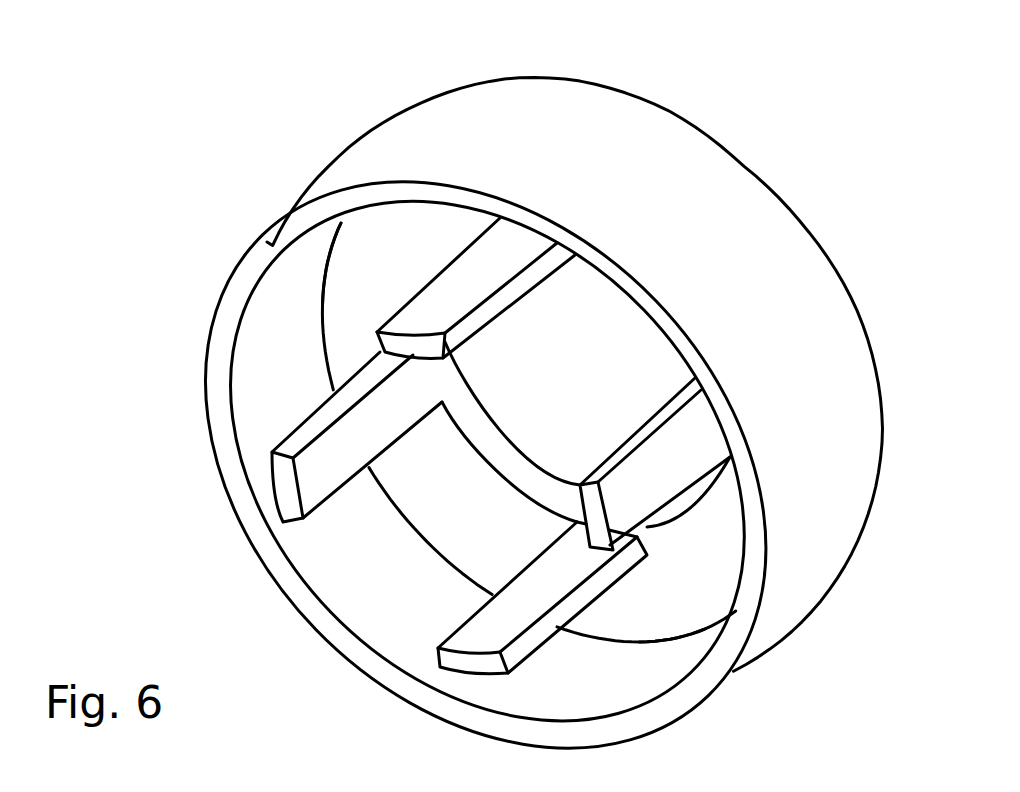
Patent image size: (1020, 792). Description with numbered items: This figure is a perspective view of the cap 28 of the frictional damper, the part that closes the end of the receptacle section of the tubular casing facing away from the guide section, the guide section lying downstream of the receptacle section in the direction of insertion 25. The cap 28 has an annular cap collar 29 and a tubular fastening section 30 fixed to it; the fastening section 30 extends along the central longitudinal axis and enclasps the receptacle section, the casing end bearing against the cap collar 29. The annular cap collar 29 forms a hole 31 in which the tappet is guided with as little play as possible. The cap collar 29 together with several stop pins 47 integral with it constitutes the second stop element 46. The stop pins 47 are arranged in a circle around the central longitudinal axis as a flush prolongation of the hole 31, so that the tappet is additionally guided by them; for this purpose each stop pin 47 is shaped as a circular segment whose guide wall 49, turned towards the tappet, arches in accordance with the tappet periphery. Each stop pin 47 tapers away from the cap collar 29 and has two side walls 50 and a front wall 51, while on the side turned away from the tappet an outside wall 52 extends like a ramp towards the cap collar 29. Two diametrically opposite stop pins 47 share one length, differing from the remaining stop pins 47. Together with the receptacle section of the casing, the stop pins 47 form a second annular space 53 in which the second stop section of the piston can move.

The direction of insertion 25 is at (330, 67).
The cap 28 is at (746, 103).
The cap collar 29 is at (380, 240).
The fastening section 30 is at (705, 187).
The hole 31 is at (560, 343).
The second stop element 46 is at (405, 275).
The stop pins 47 is at (298, 481).
The guide wall 49 is at (347, 447).
The side walls 50 is at (593, 587).
The front wall 51 is at (287, 503).
The outside wall 52 is at (415, 317).
The second annular space 53 is at (663, 673).